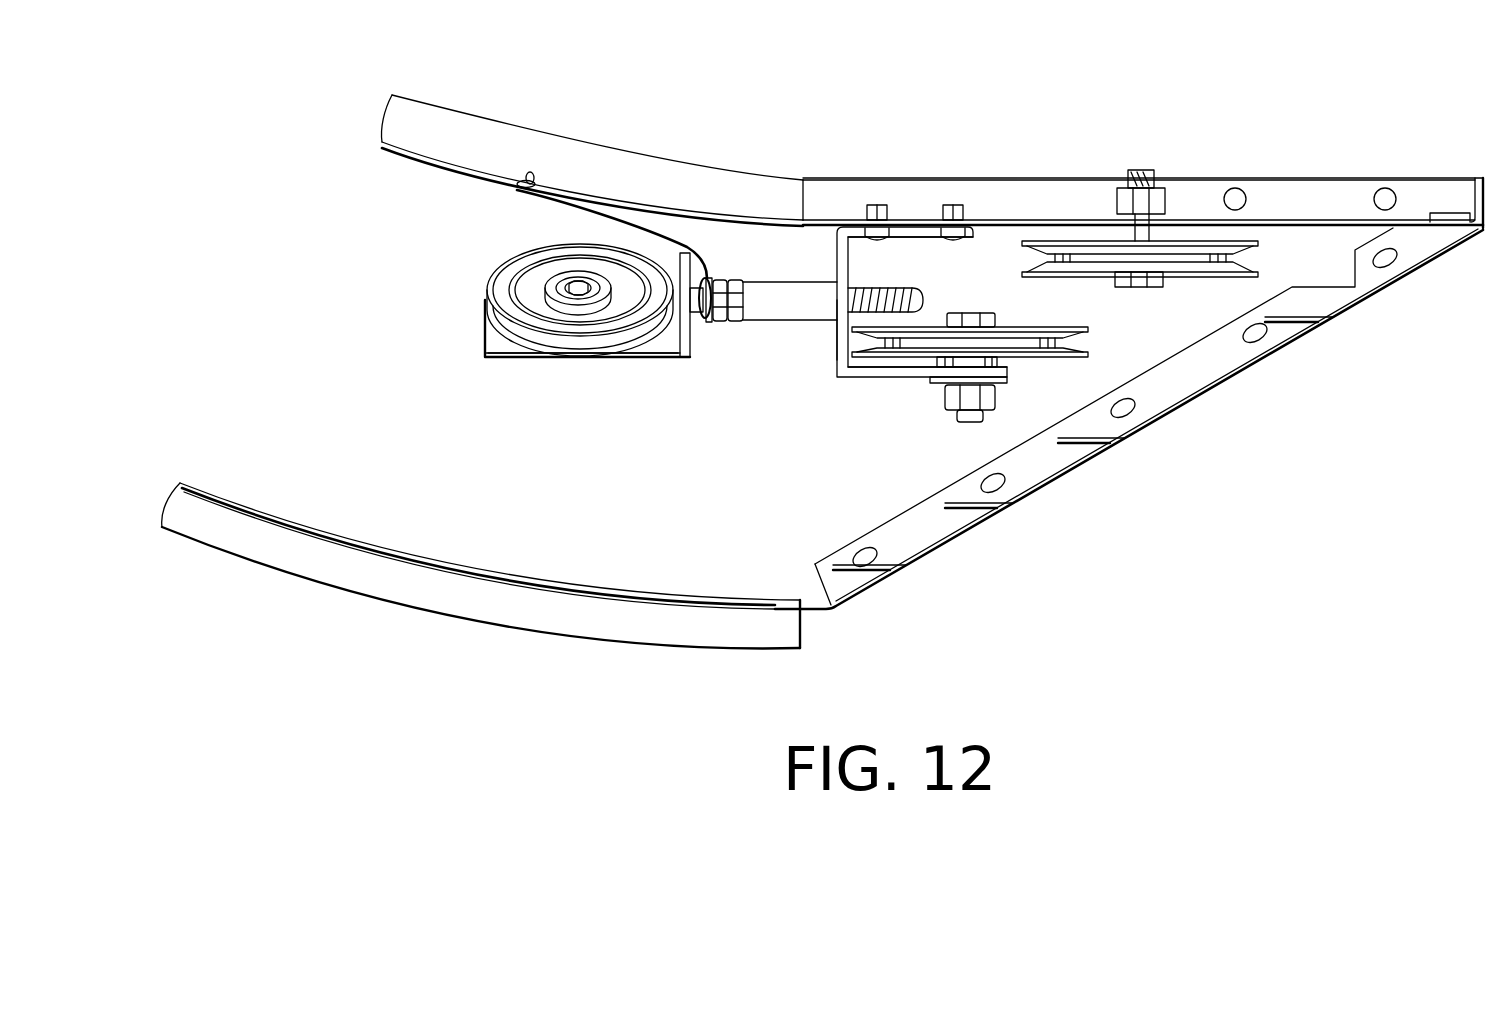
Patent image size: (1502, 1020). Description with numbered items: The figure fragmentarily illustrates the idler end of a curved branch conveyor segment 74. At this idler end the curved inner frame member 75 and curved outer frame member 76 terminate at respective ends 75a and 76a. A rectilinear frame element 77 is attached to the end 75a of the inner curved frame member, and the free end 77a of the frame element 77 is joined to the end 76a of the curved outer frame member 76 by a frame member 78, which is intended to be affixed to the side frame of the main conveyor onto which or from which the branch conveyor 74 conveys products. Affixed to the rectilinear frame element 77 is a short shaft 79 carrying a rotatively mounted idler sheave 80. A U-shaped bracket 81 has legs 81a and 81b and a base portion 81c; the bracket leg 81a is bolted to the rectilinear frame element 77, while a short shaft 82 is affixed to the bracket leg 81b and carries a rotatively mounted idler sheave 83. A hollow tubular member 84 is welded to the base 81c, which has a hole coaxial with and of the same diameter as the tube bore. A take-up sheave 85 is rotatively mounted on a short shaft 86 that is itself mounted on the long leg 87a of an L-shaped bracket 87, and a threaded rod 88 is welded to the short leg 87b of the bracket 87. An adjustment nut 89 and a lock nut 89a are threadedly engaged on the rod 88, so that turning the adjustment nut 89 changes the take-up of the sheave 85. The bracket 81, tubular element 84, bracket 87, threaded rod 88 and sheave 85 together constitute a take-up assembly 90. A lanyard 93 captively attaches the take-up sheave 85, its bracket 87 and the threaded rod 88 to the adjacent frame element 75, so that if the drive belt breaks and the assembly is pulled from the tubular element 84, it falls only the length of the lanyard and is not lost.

The curved branch conveyor segment 74 is at (855, 112).
The curved inner frame member 75 is at (415, 115).
The end of curved inner frame member 75a is at (806, 190).
The curved outer frame member 76 is at (440, 613).
The end of curved outer frame member 76a is at (803, 625).
The rectilinear frame element 77 is at (1316, 190).
The free end of rectilinear frame element 77a is at (1472, 190).
The frame member 78 is at (1190, 375).
The short shaft 79 is at (1132, 233).
The idler sheave 80 is at (1178, 257).
The U-shaped bracket 81 is at (865, 377).
The bracket leg 81a is at (917, 238).
The bracket leg 81b is at (900, 380).
The base portion of bracket 81c is at (837, 330).
The short shaft 82 is at (988, 320).
The idler sheave 83 is at (1025, 345).
The hollow tubular member 84 is at (770, 298).
The take-up sheave 85 is at (498, 281).
The short shaft 86 is at (577, 284).
The L-shaped bracket 87 is at (635, 360).
The long leg of L-shaped bracket 87a is at (495, 360).
The short leg of L-shaped bracket 87b is at (700, 342).
The threaded rod 88 is at (913, 290).
The adjustment nut 89 is at (738, 292).
The lock nut 89a is at (720, 268).
The take-up assembly 90 is at (737, 332).
The lanyard 93 is at (610, 213).